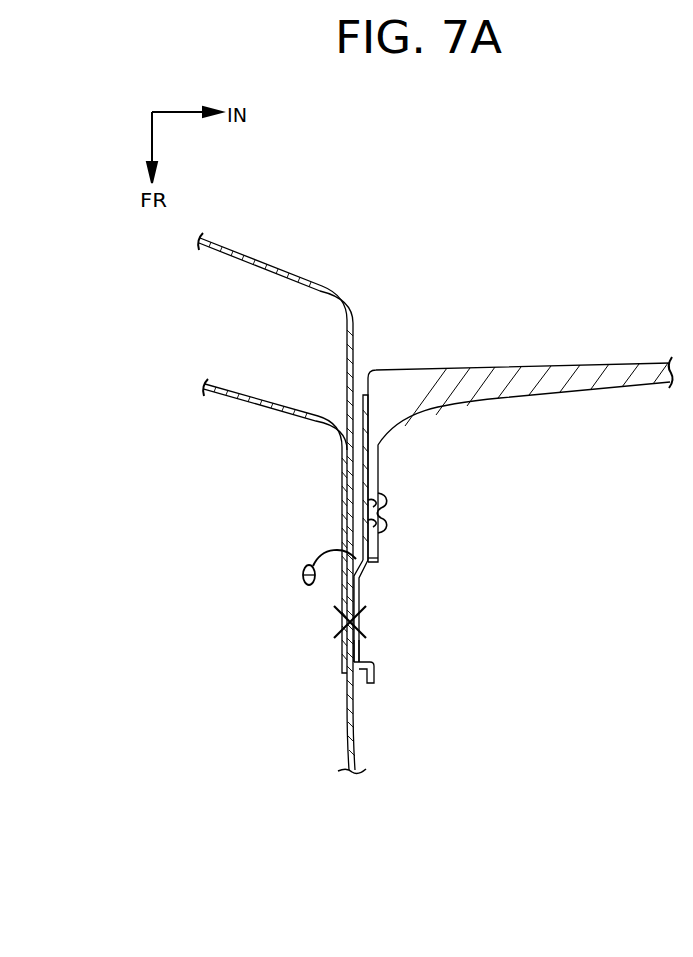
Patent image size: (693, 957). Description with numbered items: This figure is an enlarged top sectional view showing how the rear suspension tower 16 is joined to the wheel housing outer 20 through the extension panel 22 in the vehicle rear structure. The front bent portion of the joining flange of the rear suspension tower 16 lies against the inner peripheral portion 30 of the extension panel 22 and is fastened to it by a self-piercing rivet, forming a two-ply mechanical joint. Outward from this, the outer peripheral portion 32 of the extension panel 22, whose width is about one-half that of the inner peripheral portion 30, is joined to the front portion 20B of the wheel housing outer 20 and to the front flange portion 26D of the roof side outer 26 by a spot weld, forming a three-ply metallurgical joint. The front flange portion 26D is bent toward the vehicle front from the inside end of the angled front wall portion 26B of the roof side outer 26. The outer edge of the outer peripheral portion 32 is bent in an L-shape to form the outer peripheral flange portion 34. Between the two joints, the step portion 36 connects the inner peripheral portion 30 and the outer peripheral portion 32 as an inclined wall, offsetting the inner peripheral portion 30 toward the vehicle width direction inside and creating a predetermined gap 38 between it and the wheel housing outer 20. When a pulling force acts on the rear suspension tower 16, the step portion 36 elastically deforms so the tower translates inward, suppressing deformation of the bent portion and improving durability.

The rear suspension tower 16 is at (631, 393).
The wheel housing outer 20 is at (218, 256).
The front portion 20B is at (347, 352).
The extension panel 22 is at (355, 477).
The roof side outer 26 is at (218, 400).
The front wall portion 26B is at (250, 406).
The front flange portion 26D is at (343, 528).
The inner peripheral portion 30 is at (374, 443).
The outer peripheral portion 32 is at (360, 648).
The outer peripheral flange portion 34 is at (376, 681).
The step portion 36 is at (368, 572).
The gap 38 is at (354, 406).